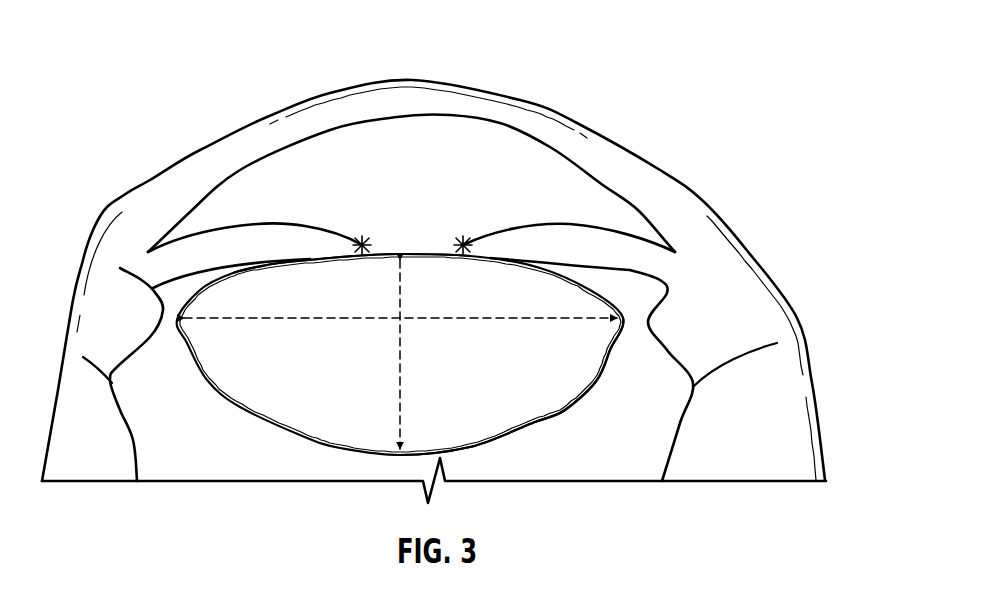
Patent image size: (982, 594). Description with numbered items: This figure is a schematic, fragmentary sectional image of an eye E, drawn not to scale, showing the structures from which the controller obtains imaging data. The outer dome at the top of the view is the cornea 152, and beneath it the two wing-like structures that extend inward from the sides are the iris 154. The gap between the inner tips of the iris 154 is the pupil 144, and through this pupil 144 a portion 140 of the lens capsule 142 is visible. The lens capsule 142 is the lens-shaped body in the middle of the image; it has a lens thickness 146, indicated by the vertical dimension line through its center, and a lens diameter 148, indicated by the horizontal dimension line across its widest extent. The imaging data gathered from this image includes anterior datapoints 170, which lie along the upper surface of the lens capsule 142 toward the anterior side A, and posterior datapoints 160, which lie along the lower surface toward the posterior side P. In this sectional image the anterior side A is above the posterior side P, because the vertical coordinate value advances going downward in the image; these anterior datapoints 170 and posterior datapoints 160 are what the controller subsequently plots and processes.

The cornea 152 is at (410, 80).
The iris 154 is at (287, 197).
The anterior side A is at (447, 182).
The eye E is at (680, 87).
The pupil 144 is at (380, 230).
The portion of a lens capsule 140 is at (443, 228).
The lens capsule 142 is at (300, 435).
The anterior datapoints 170 is at (305, 262).
The posterior datapoints 160 is at (535, 420).
The lens diameter 148 is at (305, 320).
The lens thickness 146 is at (402, 377).
The posterior side P is at (572, 425).